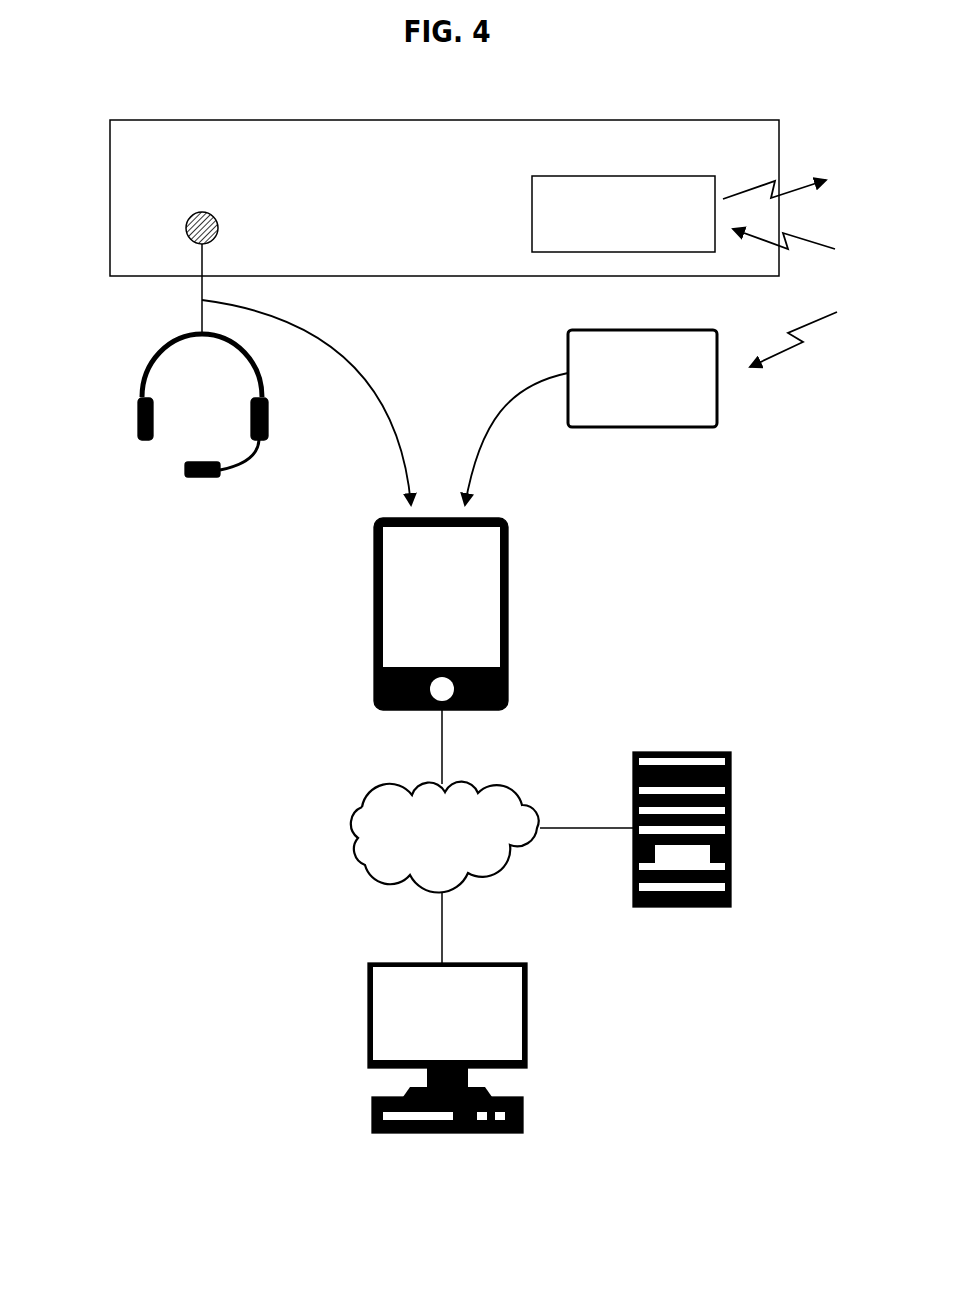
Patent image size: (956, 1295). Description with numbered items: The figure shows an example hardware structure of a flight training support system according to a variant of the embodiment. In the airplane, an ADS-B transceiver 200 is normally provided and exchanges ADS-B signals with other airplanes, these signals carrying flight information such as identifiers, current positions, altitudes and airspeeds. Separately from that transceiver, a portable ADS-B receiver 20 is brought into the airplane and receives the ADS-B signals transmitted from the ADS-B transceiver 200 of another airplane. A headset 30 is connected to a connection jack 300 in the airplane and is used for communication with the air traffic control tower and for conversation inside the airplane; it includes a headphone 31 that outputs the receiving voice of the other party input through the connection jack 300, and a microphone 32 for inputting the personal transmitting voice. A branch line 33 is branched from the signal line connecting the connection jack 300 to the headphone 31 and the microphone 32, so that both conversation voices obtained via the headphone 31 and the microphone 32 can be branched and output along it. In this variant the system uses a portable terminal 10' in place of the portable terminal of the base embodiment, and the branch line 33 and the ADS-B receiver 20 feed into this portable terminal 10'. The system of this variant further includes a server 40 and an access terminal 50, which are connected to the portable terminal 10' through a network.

The connection jack 300 is at (218, 225).
The ADS-B transceiver 200 is at (635, 176).
The ADS-B receiver 20 is at (647, 427).
The headset 30 is at (244, 420).
The headphone 31 is at (137, 425).
The microphone 32 is at (205, 480).
The branch line 33 is at (355, 352).
The portable terminal 10' is at (482, 614).
The server 40 is at (673, 752).
The access terminal 50 is at (527, 1003).